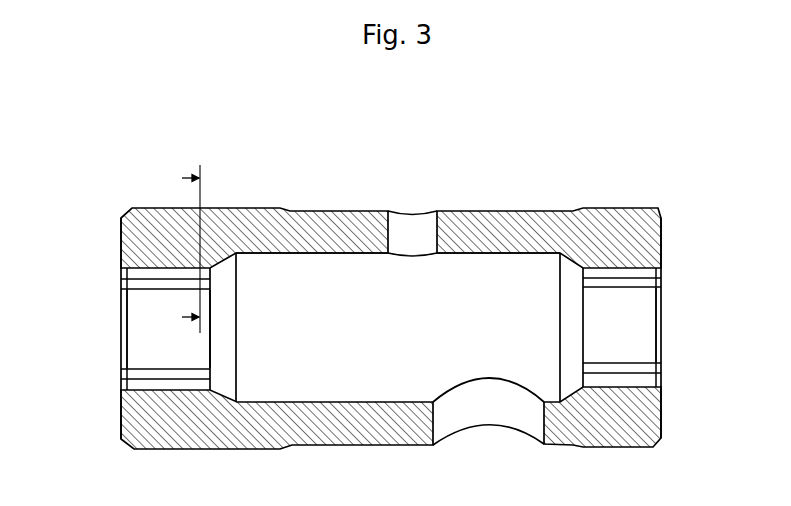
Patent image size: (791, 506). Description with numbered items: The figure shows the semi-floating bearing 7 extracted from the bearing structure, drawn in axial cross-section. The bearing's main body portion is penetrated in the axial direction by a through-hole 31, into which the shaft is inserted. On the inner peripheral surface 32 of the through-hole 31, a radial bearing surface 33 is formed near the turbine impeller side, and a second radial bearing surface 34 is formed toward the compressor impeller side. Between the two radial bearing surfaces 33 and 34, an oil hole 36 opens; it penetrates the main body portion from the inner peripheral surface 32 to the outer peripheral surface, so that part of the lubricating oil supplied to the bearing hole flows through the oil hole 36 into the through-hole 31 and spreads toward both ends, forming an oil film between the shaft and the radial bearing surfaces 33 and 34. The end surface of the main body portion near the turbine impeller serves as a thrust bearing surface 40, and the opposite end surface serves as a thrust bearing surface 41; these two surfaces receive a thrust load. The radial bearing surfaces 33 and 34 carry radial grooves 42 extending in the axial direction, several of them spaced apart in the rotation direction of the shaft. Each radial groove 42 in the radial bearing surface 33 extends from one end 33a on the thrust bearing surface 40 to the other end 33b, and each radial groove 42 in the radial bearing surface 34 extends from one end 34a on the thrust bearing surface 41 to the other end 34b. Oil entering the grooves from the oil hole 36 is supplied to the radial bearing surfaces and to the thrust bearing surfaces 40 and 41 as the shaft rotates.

The semi-floating bearing 7 is at (243, 208).
The through-hole 31 is at (496, 253).
The inner peripheral surface 32 is at (537, 253).
The radial bearing surface 33 is at (142, 268).
The one end 33a is at (128, 347).
The other end 33b is at (215, 327).
The radial bearing surface 34 is at (620, 266).
The one end 34a is at (656, 347).
The other end 34b is at (585, 324).
The oil hole 36 is at (425, 211).
The thrust bearing surface 40 is at (121, 232).
The thrust bearing surface 41 is at (662, 229).
The radial groove 42 is at (122, 284).